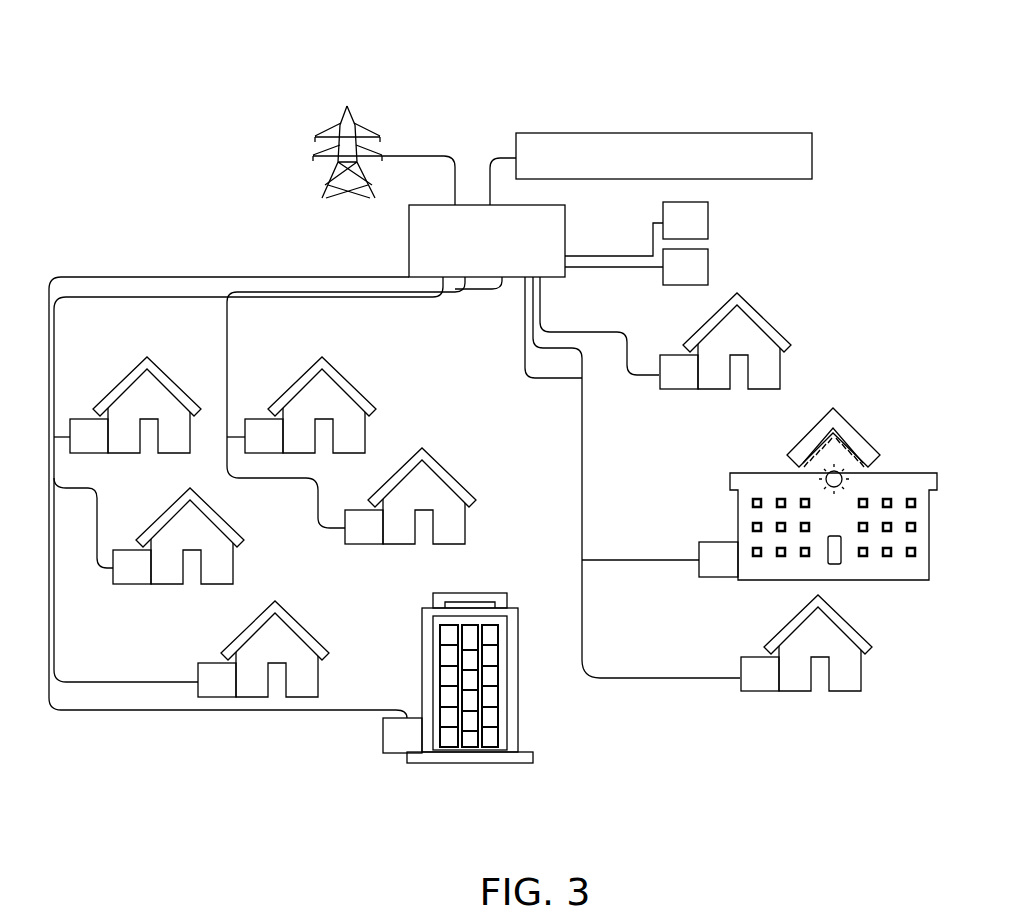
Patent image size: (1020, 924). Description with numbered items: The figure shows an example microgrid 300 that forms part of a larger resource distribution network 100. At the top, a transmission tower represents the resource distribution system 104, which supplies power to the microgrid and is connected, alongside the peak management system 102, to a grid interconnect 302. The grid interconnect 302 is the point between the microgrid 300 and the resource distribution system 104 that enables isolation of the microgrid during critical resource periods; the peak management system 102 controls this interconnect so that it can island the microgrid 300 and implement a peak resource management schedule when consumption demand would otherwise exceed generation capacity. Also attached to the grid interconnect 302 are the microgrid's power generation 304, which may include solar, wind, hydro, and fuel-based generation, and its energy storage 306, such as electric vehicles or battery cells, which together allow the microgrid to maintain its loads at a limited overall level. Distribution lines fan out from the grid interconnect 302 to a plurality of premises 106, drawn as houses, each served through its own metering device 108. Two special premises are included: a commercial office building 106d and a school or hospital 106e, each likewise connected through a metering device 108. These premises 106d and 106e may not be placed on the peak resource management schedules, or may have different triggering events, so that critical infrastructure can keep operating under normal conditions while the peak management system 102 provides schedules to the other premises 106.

The resource distribution network 100 is at (598, 78).
The microgrid 300 is at (136, 227).
The peak management system 102 is at (812, 153).
The resource distribution system 104 is at (340, 117).
The premises 106 is at (182, 385).
The premises (commercial building) 106d is at (518, 733).
The premises (school or hospital) 106e is at (917, 473).
The metering device 108 is at (78, 418).
The grid interconnect 302 is at (409, 242).
The power generation 304 is at (708, 270).
The energy storage 306 is at (708, 222).